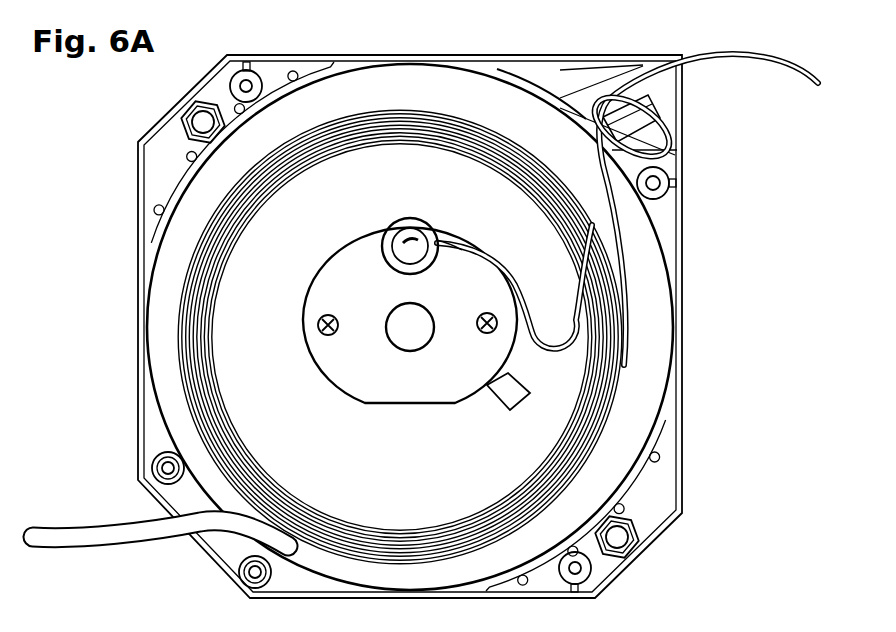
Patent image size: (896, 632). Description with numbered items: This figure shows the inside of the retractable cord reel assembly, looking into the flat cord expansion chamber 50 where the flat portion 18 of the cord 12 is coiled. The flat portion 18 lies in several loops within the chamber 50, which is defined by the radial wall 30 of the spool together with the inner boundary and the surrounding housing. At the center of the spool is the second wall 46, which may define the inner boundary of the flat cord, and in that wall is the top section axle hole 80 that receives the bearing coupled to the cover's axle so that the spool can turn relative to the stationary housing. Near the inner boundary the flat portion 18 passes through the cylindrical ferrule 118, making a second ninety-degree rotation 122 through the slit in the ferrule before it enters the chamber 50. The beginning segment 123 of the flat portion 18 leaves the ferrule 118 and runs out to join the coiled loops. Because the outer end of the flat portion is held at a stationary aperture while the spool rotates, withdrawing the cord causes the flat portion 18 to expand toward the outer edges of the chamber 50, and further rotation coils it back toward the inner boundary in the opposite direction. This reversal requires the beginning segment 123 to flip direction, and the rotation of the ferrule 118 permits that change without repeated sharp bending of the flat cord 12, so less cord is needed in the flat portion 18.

The cord 12 is at (622, 238).
The flat portion 18 is at (623, 218).
The radial wall 30 is at (398, 98).
The second wall 46 is at (343, 397).
The flat cord expansion chamber 50 is at (479, 104).
The top section axle hole 80 is at (393, 347).
The ferrule 118 is at (513, 283).
The second ninety-degree rotation 122 is at (390, 234).
The beginning segment 123 is at (437, 243).